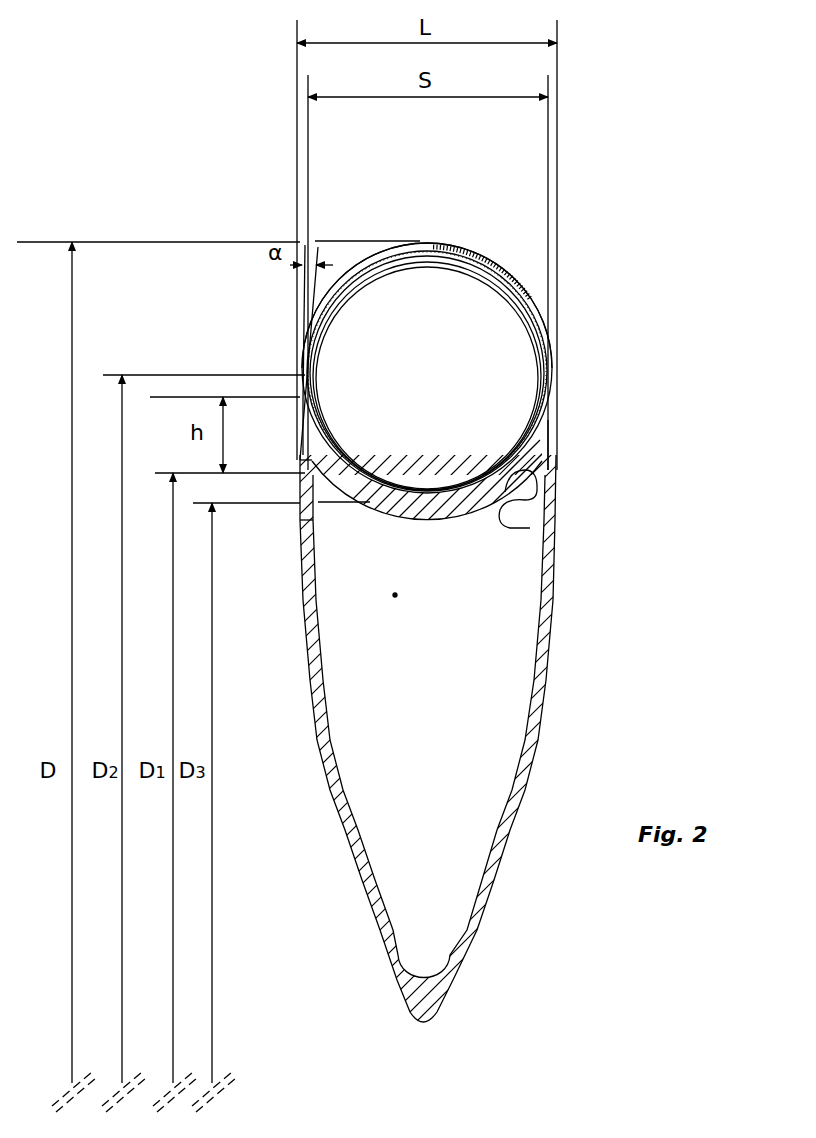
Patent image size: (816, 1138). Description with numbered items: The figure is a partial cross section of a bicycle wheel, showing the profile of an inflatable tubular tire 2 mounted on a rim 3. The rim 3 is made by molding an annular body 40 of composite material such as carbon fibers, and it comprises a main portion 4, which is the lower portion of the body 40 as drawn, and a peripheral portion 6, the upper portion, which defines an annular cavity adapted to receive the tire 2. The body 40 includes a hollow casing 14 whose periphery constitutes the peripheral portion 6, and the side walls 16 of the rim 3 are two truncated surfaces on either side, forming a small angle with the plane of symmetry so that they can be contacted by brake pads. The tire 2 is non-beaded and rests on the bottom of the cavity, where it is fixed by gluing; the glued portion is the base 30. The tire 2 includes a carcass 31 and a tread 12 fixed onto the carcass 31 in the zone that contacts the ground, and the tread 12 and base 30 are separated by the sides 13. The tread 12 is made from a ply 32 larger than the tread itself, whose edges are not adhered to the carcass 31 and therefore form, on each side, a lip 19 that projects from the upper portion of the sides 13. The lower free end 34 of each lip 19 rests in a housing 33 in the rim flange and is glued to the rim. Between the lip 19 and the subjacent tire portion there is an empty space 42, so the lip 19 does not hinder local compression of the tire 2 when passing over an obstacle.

The tire 2 is at (488, 385).
The rim 3 is at (408, 740).
The main portion 4 is at (548, 600).
The peripheral portion 6 is at (530, 524).
The tread 12 is at (540, 300).
The sides 13 is at (548, 396).
The hollow casing 14 is at (395, 595).
The side walls 16 is at (298, 558).
The lip 19 is at (557, 425).
The base 30 is at (548, 477).
The carcass 31 is at (440, 242).
The ply 32 is at (478, 258).
The housing 33 is at (300, 515).
The free end 34 is at (300, 476).
The annular body 40 is at (558, 625).
The empty space 42 is at (298, 443).